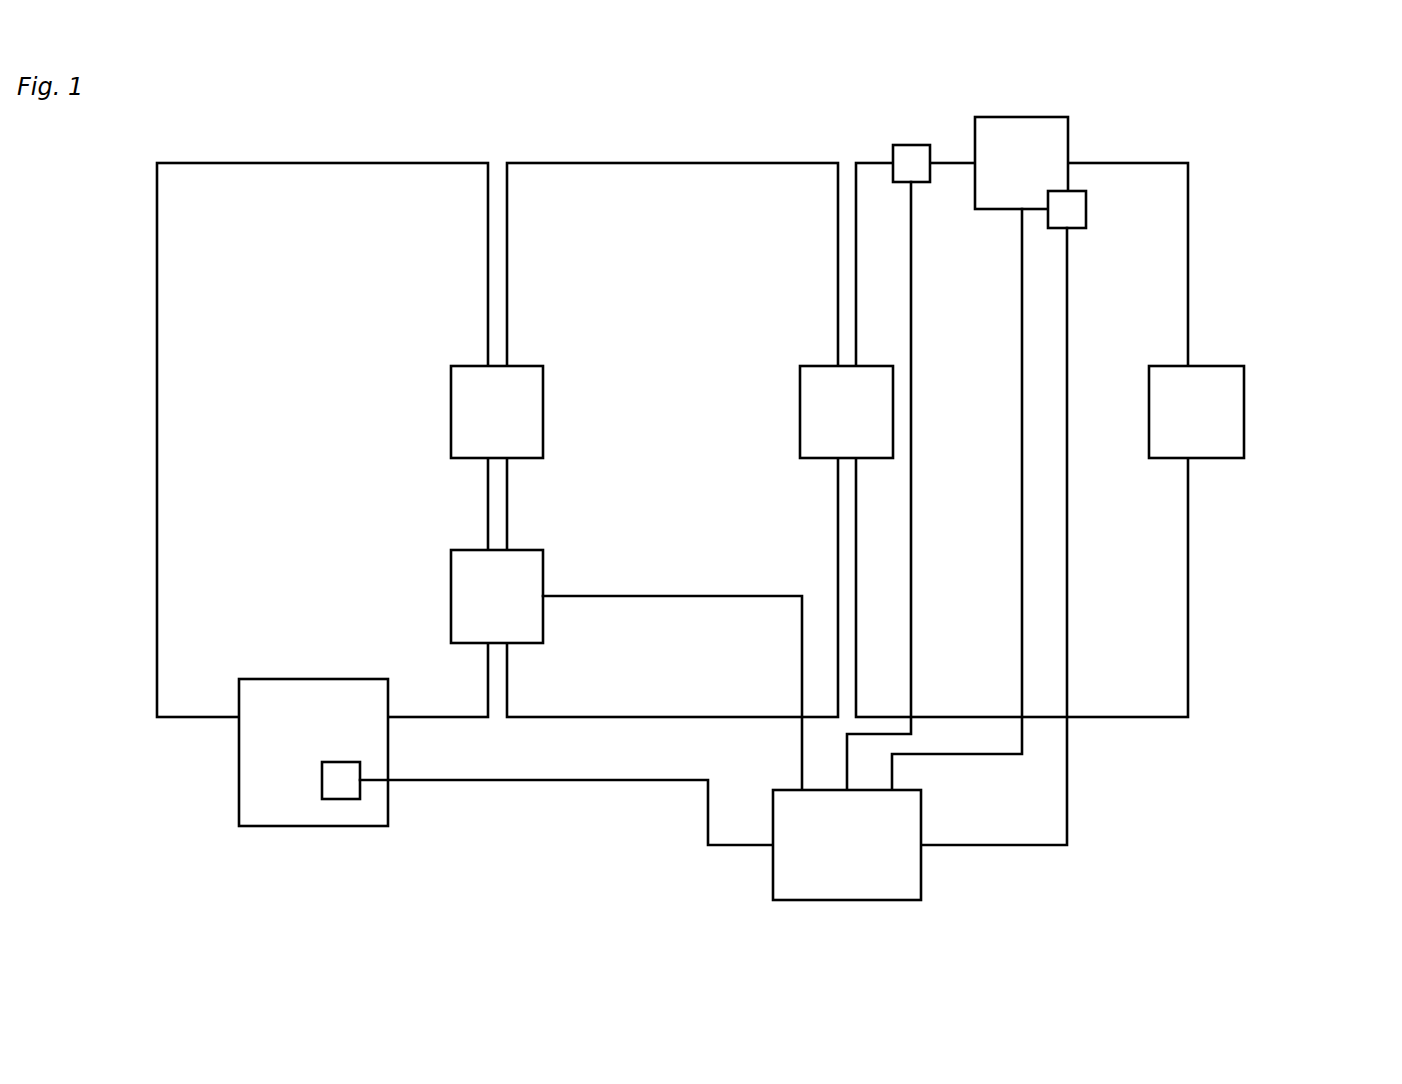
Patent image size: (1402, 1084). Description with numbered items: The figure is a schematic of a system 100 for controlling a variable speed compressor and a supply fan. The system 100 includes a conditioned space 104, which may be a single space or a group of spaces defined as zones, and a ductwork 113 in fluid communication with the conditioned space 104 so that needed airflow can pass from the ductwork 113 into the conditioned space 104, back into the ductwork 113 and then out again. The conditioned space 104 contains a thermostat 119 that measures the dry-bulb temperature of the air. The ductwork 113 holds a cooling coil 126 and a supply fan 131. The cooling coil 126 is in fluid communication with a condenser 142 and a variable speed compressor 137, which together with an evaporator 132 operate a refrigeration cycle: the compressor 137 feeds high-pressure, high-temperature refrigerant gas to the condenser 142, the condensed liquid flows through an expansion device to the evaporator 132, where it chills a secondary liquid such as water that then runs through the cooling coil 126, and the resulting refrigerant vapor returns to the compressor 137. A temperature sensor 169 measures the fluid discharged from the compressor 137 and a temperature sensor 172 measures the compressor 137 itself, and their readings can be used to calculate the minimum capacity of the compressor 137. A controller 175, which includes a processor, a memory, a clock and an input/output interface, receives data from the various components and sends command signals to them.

The system 100 is at (1250, 202).
The ductwork 113 is at (370, 163).
The cooling coil 126 is at (532, 366).
The supply fan 131 is at (530, 550).
The evaporator 132 is at (822, 366).
The condenser 142 is at (1223, 366).
The variable speed compressor 137 is at (1045, 117).
The temperature sensor 169 is at (903, 145).
The temperature sensor 172 is at (1077, 191).
The conditioned space 104 is at (275, 826).
The thermostat 119 is at (345, 799).
The controller 175 is at (897, 900).